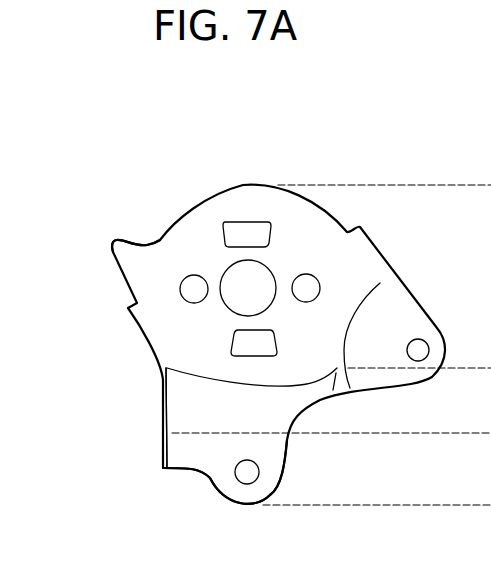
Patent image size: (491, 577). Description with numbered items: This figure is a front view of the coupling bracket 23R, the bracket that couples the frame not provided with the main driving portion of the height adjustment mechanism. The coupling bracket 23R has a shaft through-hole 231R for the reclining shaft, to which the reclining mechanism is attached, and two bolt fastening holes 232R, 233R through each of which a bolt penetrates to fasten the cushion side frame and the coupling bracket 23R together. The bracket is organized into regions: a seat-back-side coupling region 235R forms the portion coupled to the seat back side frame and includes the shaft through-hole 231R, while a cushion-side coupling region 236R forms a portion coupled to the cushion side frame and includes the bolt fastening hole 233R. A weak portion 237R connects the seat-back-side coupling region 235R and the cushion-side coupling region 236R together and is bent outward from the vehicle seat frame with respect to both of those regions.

The coupling bracket 23R is at (100, 191).
The shaft through-hole 231R is at (238, 262).
The bolt fastening hole 232R is at (427, 348).
The bolt fastening hole 233R is at (254, 484).
The seat-back-side coupling region 235R is at (162, 285).
The cushion-side coupling region 236R is at (218, 452).
The weak portion 237R is at (194, 407).